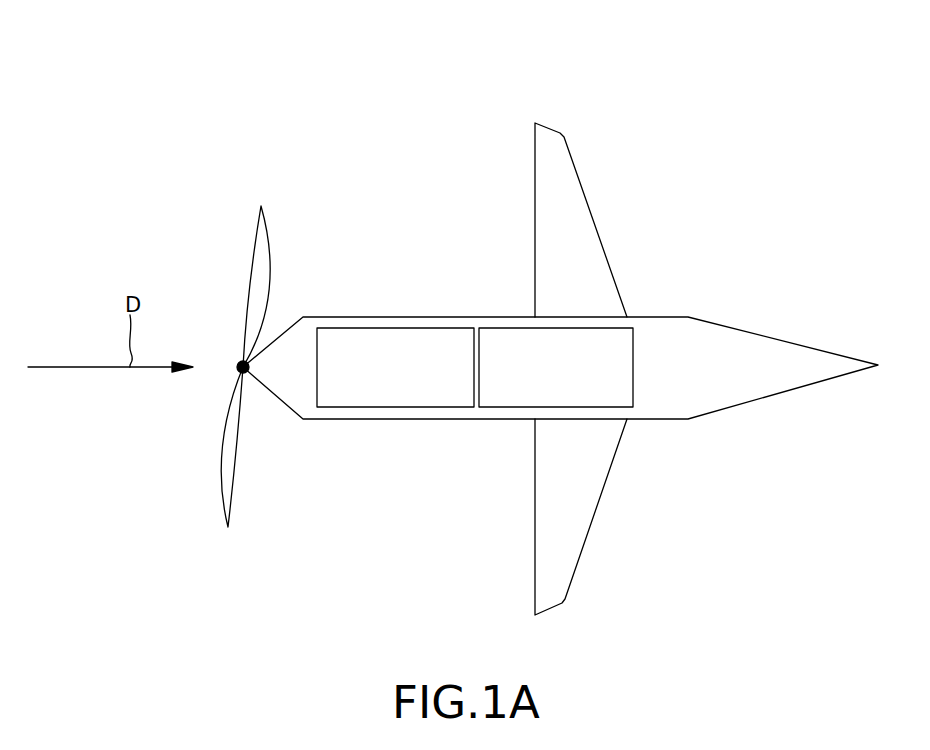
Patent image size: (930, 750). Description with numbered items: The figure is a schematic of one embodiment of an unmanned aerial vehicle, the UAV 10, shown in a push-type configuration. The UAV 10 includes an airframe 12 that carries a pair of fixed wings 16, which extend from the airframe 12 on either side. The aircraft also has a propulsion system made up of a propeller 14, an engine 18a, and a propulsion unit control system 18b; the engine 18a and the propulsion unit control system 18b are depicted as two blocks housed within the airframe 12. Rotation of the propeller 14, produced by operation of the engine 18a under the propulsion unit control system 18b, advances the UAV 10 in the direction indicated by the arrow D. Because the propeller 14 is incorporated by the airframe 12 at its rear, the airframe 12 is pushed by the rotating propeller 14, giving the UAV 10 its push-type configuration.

The UAV 10 is at (305, 105).
The airframe 12 is at (455, 317).
The propeller 14 is at (222, 460).
The fixed wings 16 is at (597, 227).
The engine 18a is at (411, 377).
The propulsion unit control system 18b is at (573, 377).